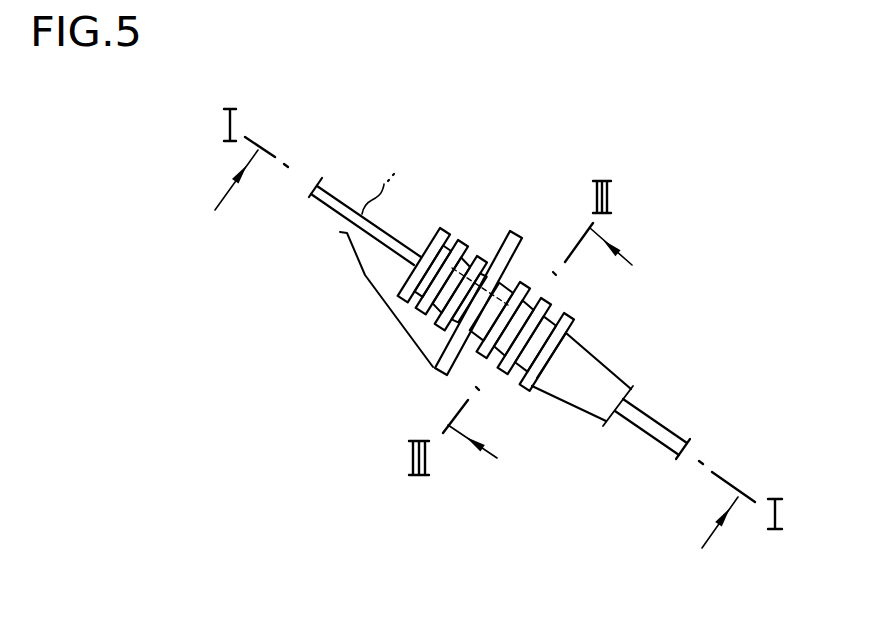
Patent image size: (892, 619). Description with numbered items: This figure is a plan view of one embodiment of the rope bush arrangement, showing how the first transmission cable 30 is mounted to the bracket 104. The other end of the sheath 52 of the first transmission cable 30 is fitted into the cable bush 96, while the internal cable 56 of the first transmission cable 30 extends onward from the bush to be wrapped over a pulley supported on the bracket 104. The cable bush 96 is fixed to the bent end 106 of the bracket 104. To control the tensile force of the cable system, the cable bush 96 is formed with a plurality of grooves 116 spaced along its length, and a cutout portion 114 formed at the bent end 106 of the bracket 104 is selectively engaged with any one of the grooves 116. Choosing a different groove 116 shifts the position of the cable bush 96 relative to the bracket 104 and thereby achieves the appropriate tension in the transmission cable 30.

The first transmission cable 30 is at (640, 330).
The sheath 52 is at (605, 381).
The internal cable 56 is at (657, 422).
The cable bush 96 is at (528, 402).
The bracket 104 is at (365, 275).
The bent end 106 is at (433, 369).
The cutout portion 114 is at (475, 177).
The grooves 116 is at (547, 188).